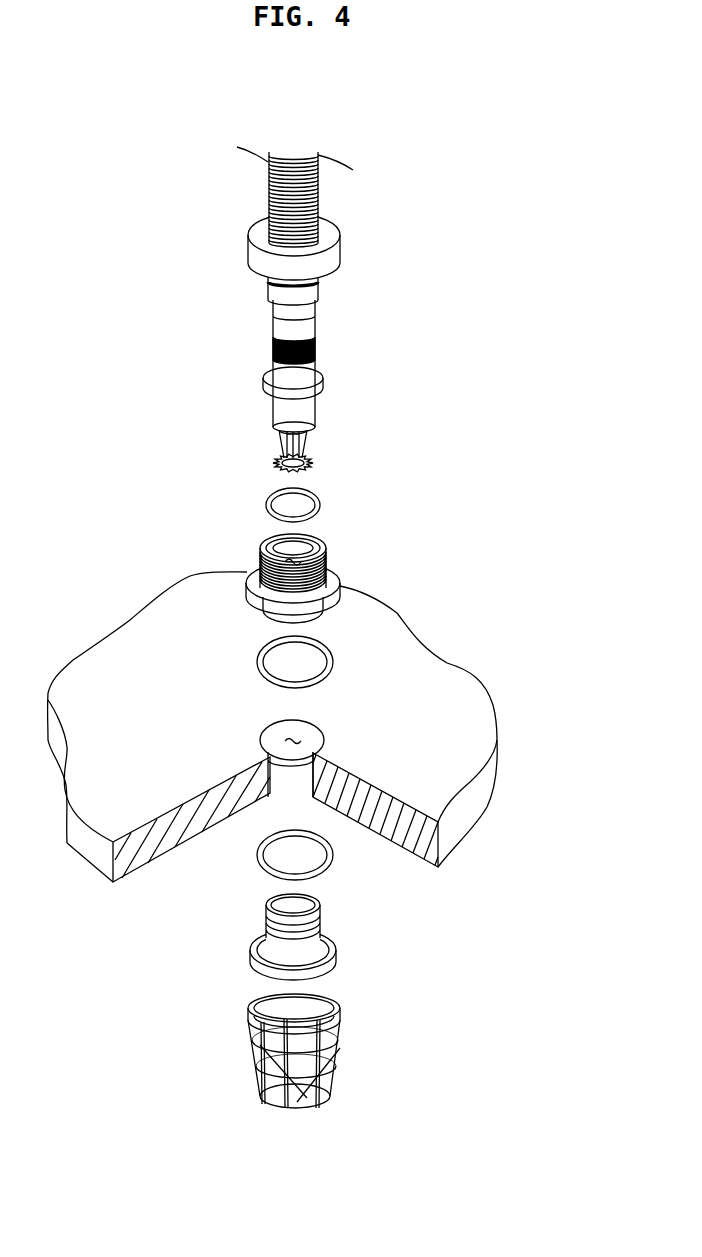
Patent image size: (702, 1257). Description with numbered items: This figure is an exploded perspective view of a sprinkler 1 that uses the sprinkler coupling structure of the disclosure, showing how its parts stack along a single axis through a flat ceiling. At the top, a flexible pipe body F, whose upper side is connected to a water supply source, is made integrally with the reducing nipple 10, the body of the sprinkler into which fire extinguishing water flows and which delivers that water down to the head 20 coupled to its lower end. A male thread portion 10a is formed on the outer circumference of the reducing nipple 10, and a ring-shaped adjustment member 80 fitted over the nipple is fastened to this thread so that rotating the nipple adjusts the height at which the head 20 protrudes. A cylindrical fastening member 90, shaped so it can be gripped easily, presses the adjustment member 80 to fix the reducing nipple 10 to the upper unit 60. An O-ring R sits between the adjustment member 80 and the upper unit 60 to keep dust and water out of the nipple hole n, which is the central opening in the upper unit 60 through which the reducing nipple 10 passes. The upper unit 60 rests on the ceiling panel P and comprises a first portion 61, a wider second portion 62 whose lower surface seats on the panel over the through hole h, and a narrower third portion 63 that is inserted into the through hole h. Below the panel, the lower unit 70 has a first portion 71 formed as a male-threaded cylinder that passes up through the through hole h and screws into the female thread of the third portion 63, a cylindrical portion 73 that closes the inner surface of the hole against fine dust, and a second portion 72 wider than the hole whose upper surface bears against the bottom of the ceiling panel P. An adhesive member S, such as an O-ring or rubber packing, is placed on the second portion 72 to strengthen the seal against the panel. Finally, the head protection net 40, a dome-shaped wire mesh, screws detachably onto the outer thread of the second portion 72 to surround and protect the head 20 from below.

The sprinkler 1 is at (437, 192).
The flexible pipe body F is at (242, 192).
The reducing nipple 10 is at (252, 320).
The male thread portion 10a is at (273, 345).
The fastening member 90 is at (340, 247).
The adjustment member 80 is at (323, 373).
The head 20 is at (312, 447).
The O-ring R is at (318, 503).
The nipple hole n is at (292, 560).
The upper unit 60 is at (296, 536).
The first portion 61 is at (330, 563).
The second portion 62 is at (340, 590).
The third portion 63 is at (345, 622).
The ceiling panel P is at (302, 727).
The through hole h is at (292, 740).
The adhesive member S is at (333, 860).
The lower unit 70 is at (306, 975).
The first portion 71 is at (323, 907).
The second portion 72 is at (338, 947).
The cylindrical portion 73 is at (277, 945).
The head protection net 40 is at (340, 1043).